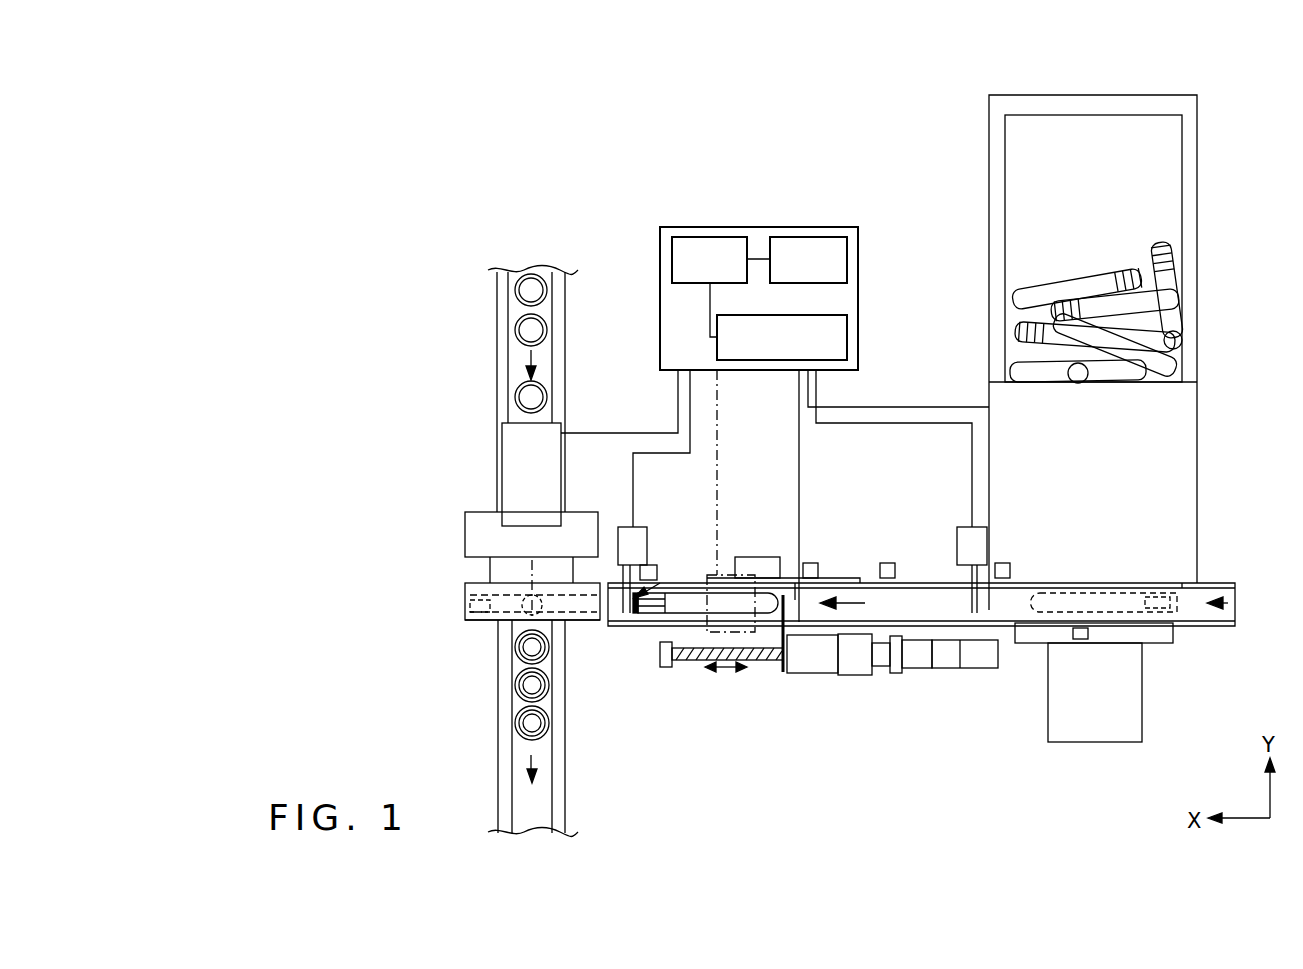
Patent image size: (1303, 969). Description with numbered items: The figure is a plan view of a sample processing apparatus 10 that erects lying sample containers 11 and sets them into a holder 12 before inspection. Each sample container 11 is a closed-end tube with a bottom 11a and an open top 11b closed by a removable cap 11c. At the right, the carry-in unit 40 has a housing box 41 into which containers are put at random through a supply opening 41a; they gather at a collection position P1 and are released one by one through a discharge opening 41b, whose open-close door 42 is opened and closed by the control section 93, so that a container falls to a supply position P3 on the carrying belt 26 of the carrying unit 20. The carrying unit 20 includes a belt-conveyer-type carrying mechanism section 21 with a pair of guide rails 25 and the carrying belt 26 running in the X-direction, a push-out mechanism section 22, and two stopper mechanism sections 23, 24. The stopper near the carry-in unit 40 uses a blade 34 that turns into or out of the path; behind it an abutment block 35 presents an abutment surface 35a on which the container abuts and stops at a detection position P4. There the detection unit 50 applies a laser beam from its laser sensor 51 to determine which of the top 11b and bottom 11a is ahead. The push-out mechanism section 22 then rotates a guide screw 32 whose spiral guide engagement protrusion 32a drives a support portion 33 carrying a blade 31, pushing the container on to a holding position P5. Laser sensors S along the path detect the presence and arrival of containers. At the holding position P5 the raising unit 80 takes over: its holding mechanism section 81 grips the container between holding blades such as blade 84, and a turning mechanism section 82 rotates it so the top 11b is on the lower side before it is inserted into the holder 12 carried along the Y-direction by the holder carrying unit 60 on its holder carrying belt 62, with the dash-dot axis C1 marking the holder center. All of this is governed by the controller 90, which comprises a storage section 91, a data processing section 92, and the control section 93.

The sample processing apparatus 10 is at (652, 145).
The sample container 11 is at (1130, 300).
The bottom 11a is at (770, 593).
The top 11b is at (652, 613).
The cap 11c is at (1150, 597).
The holder 12 is at (548, 330).
The carrying unit 20 is at (968, 652).
The carrying mechanism section 21 is at (840, 612).
The push-out mechanism section 22 is at (860, 660).
The stopper mechanism section 23 is at (957, 545).
The stopper mechanism section 24 is at (640, 543).
The guide rails 25 is at (910, 652).
The carrying belt 26 is at (938, 652).
The blade 31 is at (797, 600).
The guide screw 32 is at (668, 668).
The guide engagement protrusion 32a is at (695, 662).
The support portion 33 is at (800, 665).
The blade 34 is at (626, 613).
The abutment block 35 is at (636, 613).
The abutment surface 35a is at (656, 583).
The carry-in unit 40 is at (1200, 405).
The housing box 41 is at (1200, 452).
The supply opening 41a is at (1182, 205).
The discharge opening 41b is at (1180, 583).
The open-close door 42 is at (1190, 626).
The detection unit 50 is at (720, 578).
The laser sensor 51 is at (755, 557).
The holder carrying unit 60 is at (565, 770).
The holder carrying belt 62 is at (525, 788).
The raising unit 80 is at (480, 532).
The holding mechanism section 81 is at (470, 594).
The turning mechanism section 82 is at (490, 570).
The holding blade 84 is at (470, 615).
The controller 90 is at (818, 227).
The storage section 91 is at (847, 250).
The data processing section 92 is at (847, 333).
The control section 93 is at (716, 237).
The center axis C1 is at (535, 571).
The collection position P1 is at (1180, 357).
The supply position P3 is at (1040, 612).
The detection position P4 is at (695, 596).
The holding position P5 is at (522, 600).
The laser sensor S is at (650, 565).